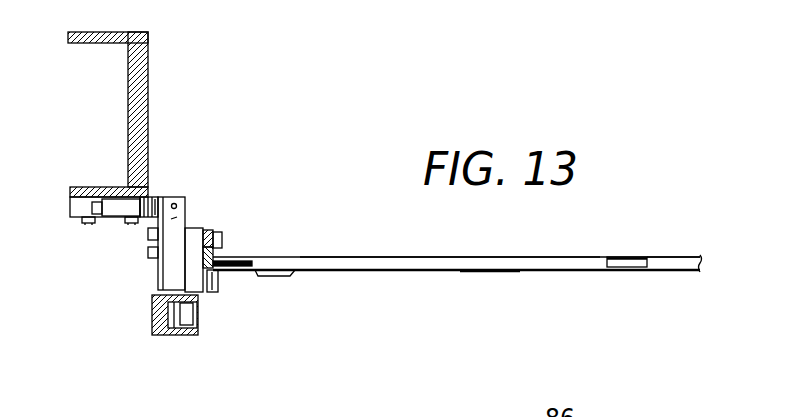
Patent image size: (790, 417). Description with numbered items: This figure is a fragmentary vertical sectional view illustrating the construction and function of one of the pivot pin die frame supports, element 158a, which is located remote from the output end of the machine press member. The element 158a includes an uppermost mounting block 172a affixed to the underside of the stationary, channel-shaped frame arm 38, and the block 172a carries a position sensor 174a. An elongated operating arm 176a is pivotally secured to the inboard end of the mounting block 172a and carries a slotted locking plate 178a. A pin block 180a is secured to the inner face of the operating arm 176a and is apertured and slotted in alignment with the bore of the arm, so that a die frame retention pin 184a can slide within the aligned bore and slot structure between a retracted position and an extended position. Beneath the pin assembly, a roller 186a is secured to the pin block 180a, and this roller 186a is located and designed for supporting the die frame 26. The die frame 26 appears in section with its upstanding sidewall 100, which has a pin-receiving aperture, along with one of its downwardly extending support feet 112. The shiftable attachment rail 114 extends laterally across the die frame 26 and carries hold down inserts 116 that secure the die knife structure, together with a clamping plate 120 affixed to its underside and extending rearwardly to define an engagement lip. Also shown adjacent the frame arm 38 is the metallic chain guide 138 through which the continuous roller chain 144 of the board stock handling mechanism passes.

The frame arm 38 is at (127, 135).
The mounting block 172a is at (70, 203).
The position sensor 174a is at (113, 217).
The element 158a is at (163, 185).
The operating arm 176a is at (173, 255).
The slotted locking plate 178a is at (157, 272).
The pin block 180a is at (198, 227).
The die frame retention pin 184a is at (222, 240).
The roller 186a is at (215, 292).
The chain guide 138 is at (162, 337).
The roller chain 144 is at (190, 337).
The upstanding sidewall 100 is at (217, 253).
The support feet 112 is at (290, 276).
The shiftable attachment rail 114 is at (442, 262).
The hold down insert 116 is at (622, 257).
The clamping plate 120 is at (530, 271).
The die frame 26 is at (490, 276).